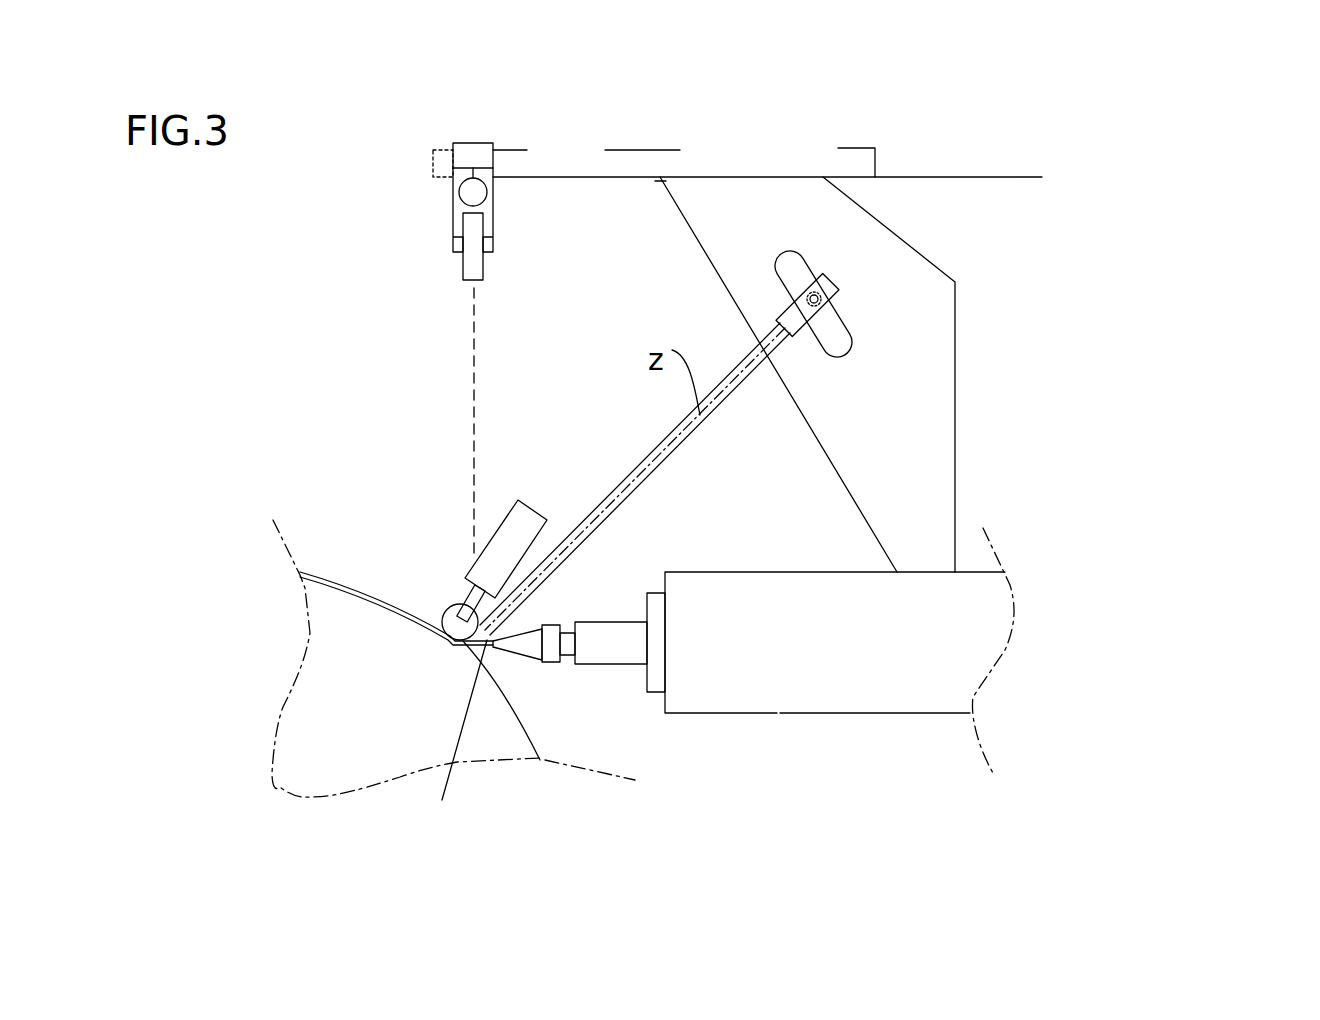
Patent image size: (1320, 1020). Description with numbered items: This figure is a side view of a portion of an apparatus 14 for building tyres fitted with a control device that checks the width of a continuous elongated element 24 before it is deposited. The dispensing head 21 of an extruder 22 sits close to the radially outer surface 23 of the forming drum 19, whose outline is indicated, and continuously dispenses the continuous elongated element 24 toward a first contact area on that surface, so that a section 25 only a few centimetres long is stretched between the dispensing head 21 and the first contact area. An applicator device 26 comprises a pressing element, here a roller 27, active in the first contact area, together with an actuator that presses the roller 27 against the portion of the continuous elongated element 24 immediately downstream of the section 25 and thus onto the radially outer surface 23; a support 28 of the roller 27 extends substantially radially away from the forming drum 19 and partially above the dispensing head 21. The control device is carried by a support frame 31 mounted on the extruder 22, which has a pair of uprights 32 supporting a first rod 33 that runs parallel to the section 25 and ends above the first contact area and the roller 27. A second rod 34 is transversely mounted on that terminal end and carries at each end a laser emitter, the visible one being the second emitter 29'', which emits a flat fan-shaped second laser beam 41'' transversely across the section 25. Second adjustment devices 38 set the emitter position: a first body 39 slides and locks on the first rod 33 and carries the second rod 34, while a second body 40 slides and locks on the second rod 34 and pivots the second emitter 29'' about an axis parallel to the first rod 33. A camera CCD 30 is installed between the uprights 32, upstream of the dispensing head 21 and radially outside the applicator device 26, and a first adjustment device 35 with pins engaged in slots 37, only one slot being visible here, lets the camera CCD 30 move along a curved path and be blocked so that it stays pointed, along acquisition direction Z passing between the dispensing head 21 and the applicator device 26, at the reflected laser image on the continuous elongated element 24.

The apparatus 14 is at (1147, 183).
The forming drum 19 is at (488, 745).
The dispensing head 21 is at (518, 645).
The extruder 22 is at (820, 648).
The radially outer surface 23 is at (530, 735).
The continuous elongated element 24 is at (336, 569).
The section 25 is at (442, 800).
The applicator device 26 is at (452, 548).
The roller 27 is at (450, 607).
The support 28 is at (504, 517).
The second emitter 29'' is at (551, 273).
The camera CCD 30 is at (814, 348).
The support frame 31 is at (880, 192).
The uprights 32 is at (897, 298).
The first rod 33 is at (630, 150).
The second rod 34 is at (467, 197).
The first adjustment device 35 is at (832, 260).
The slot 37 is at (853, 350).
The second adjustment devices 38 is at (546, 129).
The first body 39 is at (473, 143).
The second body 40 is at (493, 226).
The second laser beam 41'' is at (366, 424).